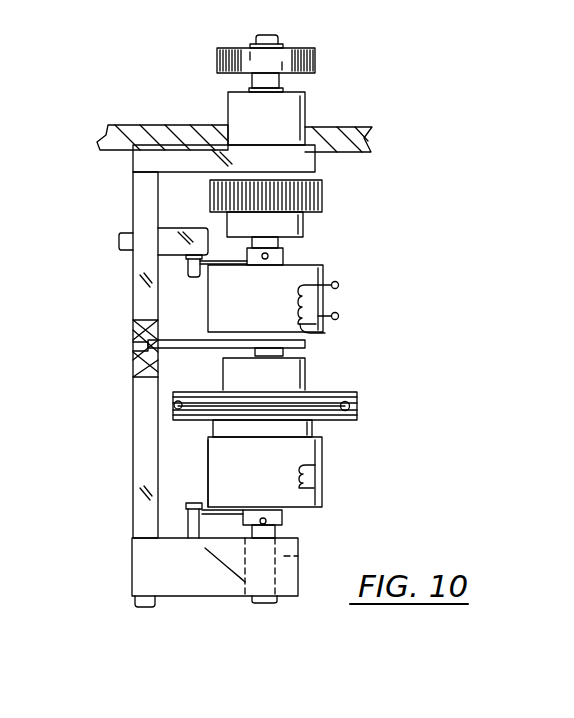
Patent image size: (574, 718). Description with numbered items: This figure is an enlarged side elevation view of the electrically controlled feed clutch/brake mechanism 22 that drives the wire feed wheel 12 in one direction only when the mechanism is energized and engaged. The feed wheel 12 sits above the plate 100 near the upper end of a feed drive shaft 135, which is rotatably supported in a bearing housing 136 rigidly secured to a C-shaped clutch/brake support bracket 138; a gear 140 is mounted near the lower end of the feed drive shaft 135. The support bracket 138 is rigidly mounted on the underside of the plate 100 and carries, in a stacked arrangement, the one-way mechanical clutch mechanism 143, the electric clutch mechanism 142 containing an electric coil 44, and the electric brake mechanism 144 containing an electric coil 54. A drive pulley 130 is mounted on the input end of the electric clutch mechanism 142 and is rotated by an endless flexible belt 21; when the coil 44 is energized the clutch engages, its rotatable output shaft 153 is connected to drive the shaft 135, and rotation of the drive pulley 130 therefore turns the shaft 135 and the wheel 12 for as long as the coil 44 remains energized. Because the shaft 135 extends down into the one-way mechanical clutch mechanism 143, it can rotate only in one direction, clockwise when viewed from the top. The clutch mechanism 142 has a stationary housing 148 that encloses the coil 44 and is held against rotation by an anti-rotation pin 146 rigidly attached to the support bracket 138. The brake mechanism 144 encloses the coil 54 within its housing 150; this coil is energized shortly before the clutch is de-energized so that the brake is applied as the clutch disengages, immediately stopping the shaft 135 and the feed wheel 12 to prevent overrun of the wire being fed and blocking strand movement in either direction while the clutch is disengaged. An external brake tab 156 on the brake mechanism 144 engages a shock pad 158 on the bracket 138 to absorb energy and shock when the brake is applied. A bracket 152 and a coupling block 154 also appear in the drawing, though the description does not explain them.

The wire feed wheel 12 is at (310, 60).
The feed drive shaft 135 is at (282, 83).
The bearing housing 136 is at (306, 112).
The plate 100 is at (369, 124).
The clutch/brake support bracket 138 is at (133, 178).
The gear 140 is at (323, 196).
The bracket 152 is at (182, 217).
The coupling block 154 is at (284, 257).
The feed clutch/brake mechanism 22 is at (397, 258).
The electric brake mechanism 144 is at (339, 286).
The brake housing 150 is at (208, 302).
The electric coil 54 is at (340, 323).
The shock pad 158 is at (133, 350).
The brake tab 156 is at (203, 350).
The drive pulley 130 is at (345, 394).
The endless flexible belt 21 is at (350, 407).
The stationary housing 148 is at (208, 448).
The electric clutch mechanism 142 is at (323, 457).
The electric coil 44 is at (322, 476).
The anti-rotation pin 146 is at (187, 515).
The rotatable output shaft 153 is at (283, 518).
The one-way mechanical clutch mechanism 143 is at (298, 551).